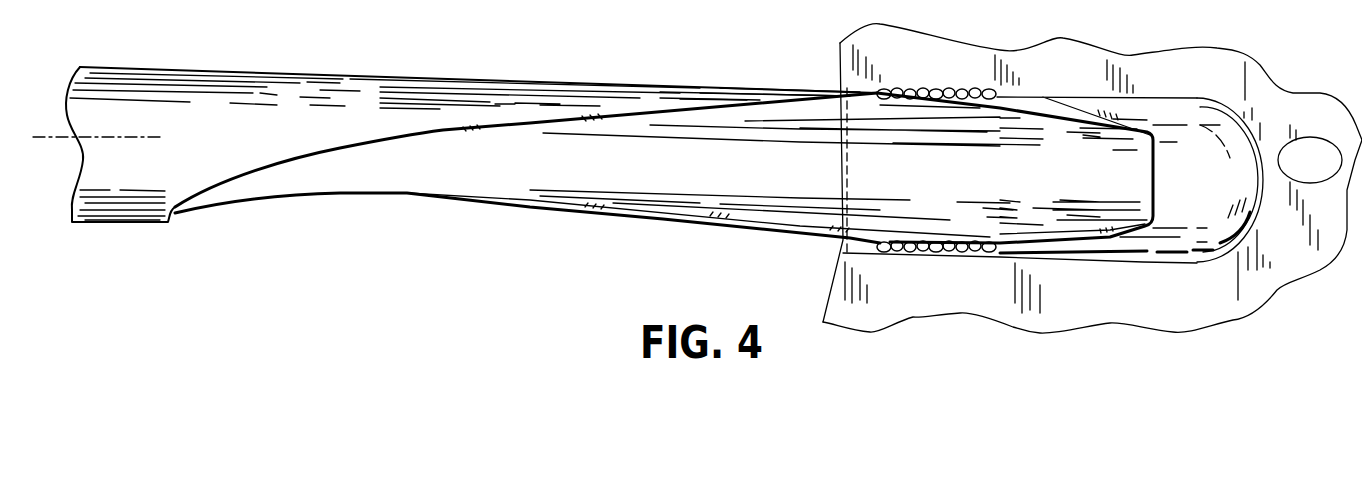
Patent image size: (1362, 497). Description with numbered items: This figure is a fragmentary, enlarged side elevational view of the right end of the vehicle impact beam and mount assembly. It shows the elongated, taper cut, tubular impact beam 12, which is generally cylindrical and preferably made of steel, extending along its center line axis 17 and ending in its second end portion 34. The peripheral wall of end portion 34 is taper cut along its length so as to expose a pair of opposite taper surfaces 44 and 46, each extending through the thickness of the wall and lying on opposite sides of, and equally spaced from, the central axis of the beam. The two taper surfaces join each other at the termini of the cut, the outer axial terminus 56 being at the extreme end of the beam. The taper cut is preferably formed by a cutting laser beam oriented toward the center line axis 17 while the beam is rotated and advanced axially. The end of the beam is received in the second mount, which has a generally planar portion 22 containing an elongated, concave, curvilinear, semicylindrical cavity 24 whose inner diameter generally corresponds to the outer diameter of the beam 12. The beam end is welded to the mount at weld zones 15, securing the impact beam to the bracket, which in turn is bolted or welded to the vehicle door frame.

The tubular impact beam 12 is at (267, 102).
The weld zones 15 is at (937, 88).
The center line axis 17 is at (43, 137).
The planar portion 22 is at (1045, 48).
The semicylindrical cavity 24 is at (1145, 257).
The second end portion 34 is at (661, 127).
The taper surface 44 is at (578, 117).
The taper surface 46 is at (660, 221).
The outer axial terminus 56 is at (1157, 160).